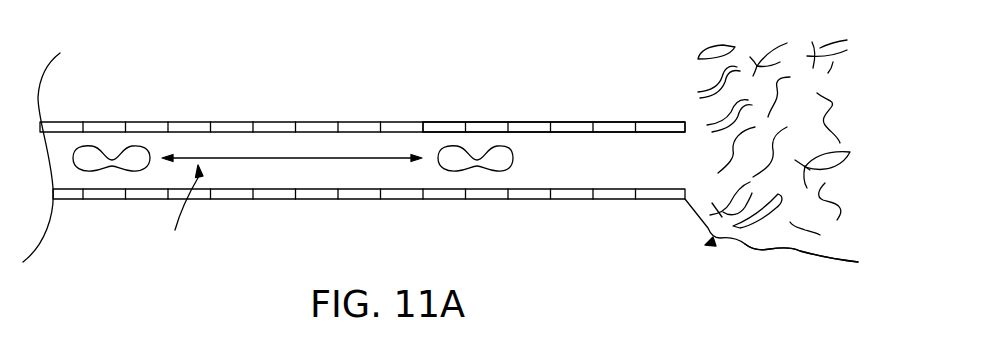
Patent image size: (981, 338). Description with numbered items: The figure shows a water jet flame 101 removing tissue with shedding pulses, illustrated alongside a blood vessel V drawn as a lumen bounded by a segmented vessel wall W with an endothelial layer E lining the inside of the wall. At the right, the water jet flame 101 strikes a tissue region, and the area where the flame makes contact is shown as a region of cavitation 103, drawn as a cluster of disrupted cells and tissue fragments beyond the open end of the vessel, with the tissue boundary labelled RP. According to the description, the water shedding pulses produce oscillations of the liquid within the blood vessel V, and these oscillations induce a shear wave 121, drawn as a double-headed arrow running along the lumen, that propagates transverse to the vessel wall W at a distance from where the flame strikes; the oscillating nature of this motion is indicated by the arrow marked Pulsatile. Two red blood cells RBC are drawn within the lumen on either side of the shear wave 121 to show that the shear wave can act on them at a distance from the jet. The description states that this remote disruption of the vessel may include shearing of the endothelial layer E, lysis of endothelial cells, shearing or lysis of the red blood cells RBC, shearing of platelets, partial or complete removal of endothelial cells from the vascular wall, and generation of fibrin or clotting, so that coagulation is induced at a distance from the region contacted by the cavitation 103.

The blood vessel V is at (362, 148).
The vessel wall W is at (280, 122).
The endothelial layer E is at (575, 127).
The red blood cells RBC is at (112, 155).
The shear wave 121 is at (373, 160).
The pulsatile flow direction Pulsatile is at (175, 211).
The water jet flame 101 is at (709, 244).
The cavitation 103 is at (787, 157).
The retinal pigment / tissue boundary RP is at (785, 250).